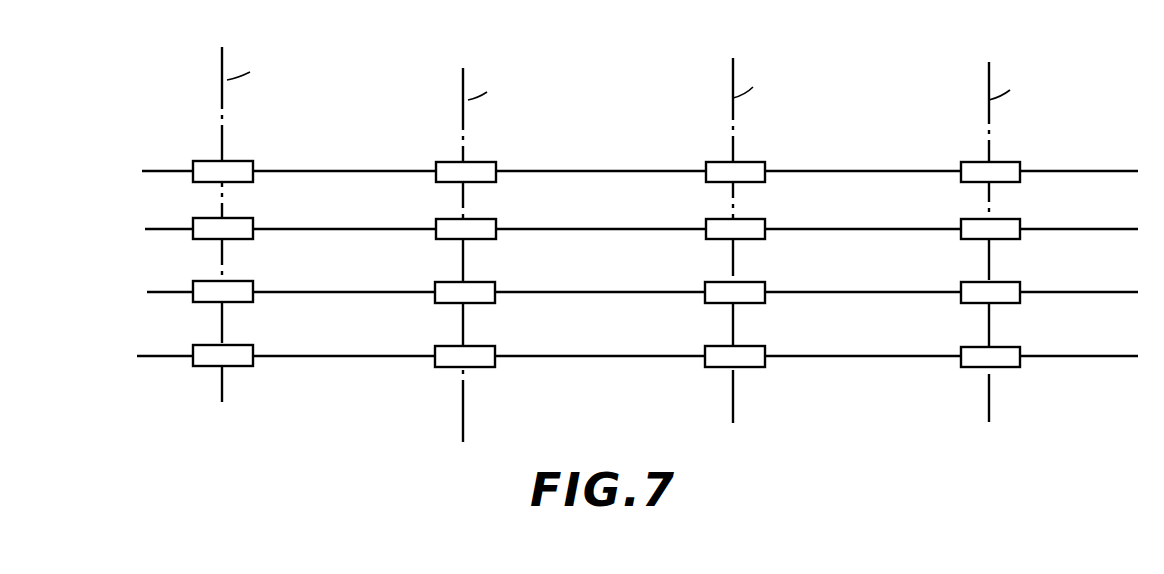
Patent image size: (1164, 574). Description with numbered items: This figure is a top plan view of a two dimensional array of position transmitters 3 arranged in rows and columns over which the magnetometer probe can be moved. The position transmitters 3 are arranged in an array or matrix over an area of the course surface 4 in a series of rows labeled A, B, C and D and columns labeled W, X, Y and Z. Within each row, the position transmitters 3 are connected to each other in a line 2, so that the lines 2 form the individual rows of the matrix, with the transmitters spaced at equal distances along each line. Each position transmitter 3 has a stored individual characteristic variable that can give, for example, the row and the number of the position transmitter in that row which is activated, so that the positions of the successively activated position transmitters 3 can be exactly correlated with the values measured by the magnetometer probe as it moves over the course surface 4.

The line 2 is at (900, 171).
The position transmitter 3 is at (622, 264).
The course surface 4 is at (632, 387).